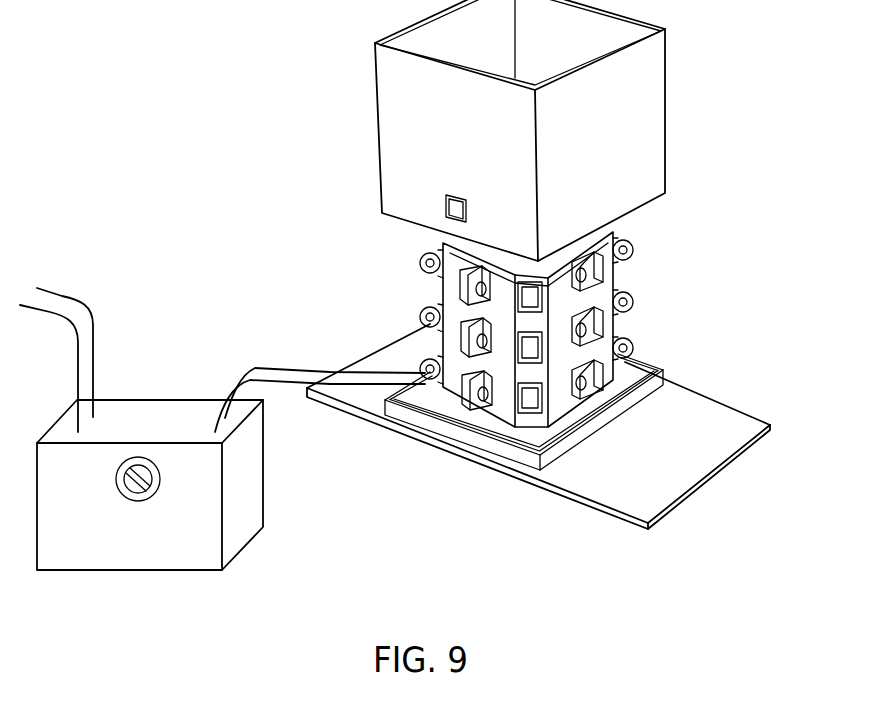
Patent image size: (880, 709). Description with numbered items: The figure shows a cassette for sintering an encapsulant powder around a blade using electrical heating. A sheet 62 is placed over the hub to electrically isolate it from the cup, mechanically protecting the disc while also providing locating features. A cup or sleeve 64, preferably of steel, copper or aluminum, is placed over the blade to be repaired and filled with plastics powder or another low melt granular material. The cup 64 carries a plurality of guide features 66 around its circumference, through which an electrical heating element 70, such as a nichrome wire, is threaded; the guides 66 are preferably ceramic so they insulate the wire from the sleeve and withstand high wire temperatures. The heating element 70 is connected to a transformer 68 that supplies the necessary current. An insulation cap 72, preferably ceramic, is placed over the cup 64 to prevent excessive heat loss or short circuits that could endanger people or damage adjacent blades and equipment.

The sheet 62 is at (678, 473).
The cup or sleeve 64 is at (600, 352).
The guide features 66 is at (597, 273).
The transformer 68 is at (244, 523).
The electrical heating element 70 is at (293, 365).
The insulation cap 72 is at (653, 63).